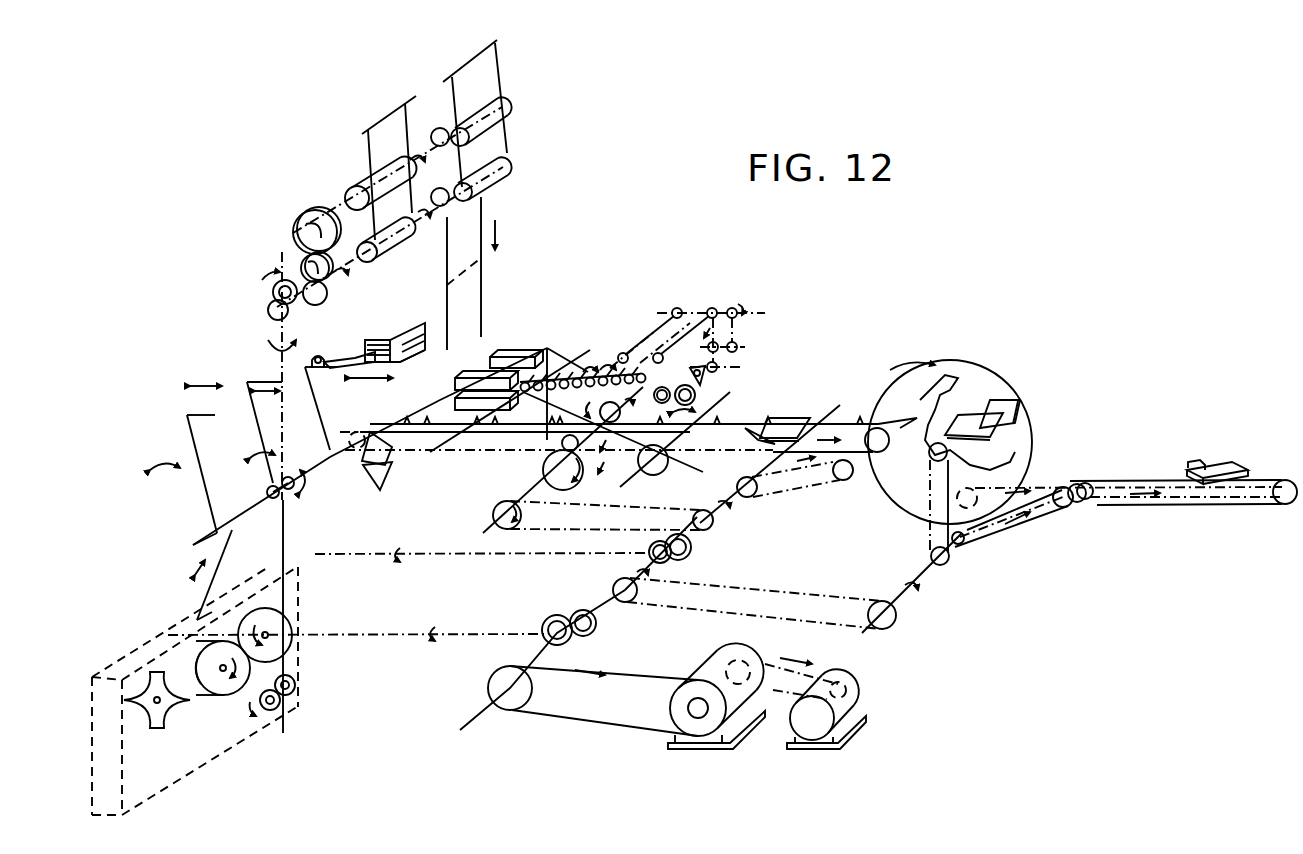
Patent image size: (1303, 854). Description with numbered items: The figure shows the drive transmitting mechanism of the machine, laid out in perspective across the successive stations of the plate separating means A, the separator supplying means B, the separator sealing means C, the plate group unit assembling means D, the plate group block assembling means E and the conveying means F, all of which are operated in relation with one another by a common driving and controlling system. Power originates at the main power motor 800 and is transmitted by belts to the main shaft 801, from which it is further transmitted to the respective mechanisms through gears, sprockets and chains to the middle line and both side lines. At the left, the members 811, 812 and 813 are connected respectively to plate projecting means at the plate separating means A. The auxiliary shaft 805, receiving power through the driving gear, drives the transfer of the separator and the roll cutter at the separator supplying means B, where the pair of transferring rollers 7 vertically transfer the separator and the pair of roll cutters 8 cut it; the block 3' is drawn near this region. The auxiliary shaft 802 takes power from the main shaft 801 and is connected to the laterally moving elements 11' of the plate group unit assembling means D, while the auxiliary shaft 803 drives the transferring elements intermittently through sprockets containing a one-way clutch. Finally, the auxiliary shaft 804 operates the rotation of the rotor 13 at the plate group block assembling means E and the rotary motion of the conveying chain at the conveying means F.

The transferring roller 7 is at (515, 90).
The roll cutter 8 is at (512, 146).
The stacked sheets block 3' is at (391, 323).
The laterally moving element 11' is at (687, 335).
The rotor 13 is at (888, 382).
The drive connection to plate projecting means 811 is at (175, 434).
The drive connection to plate projecting means 812 is at (243, 402).
The drive connection to plate projecting means 813 is at (306, 356).
The auxiliary shaft 805 is at (290, 600).
The auxiliary shaft 802 is at (542, 481).
The auxiliary shaft 803 is at (635, 475).
The auxiliary shaft 804 is at (930, 576).
The main shaft 801 is at (480, 712).
The main power motor 800 is at (762, 732).
The plate separating means A is at (206, 350).
The separator supplying means B is at (532, 232).
The separator sealing means C is at (524, 342).
The plate group unit assembling means D is at (787, 402).
The plate group block assembling means E is at (996, 360).
The conveying means F is at (1207, 452).